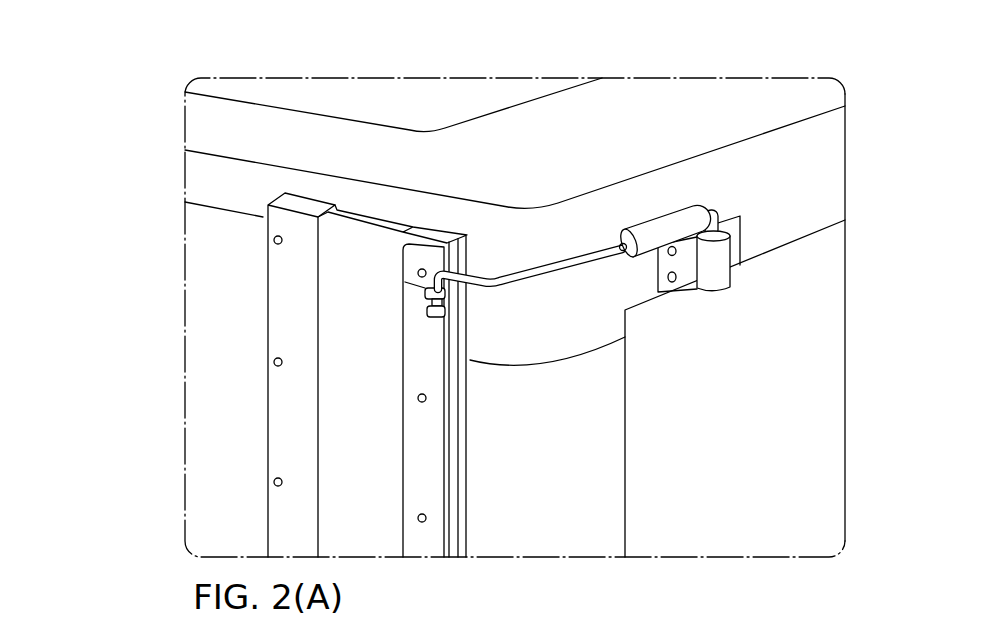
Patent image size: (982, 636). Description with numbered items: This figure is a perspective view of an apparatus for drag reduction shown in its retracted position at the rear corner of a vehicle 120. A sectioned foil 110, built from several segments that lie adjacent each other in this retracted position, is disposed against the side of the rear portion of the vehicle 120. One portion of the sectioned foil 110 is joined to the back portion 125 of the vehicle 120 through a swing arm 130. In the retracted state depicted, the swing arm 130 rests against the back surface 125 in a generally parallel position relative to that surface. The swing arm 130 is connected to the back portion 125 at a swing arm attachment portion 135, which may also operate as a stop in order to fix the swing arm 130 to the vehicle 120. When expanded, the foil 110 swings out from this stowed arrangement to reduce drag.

The vehicle 120 is at (535, 58).
The back portion 125 is at (802, 153).
The sectioned foil 110 is at (287, 302).
The swing arm 130 is at (553, 273).
The swing arm attachment portion 135 is at (720, 260).